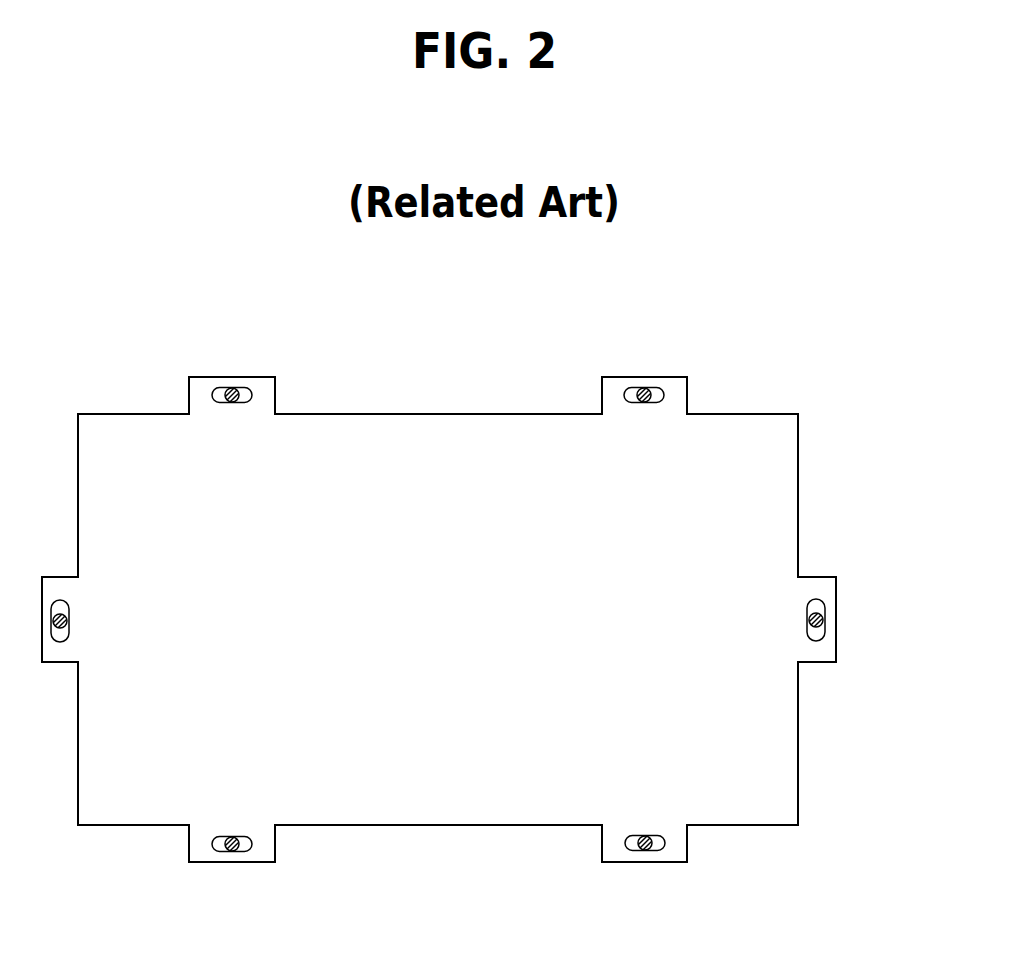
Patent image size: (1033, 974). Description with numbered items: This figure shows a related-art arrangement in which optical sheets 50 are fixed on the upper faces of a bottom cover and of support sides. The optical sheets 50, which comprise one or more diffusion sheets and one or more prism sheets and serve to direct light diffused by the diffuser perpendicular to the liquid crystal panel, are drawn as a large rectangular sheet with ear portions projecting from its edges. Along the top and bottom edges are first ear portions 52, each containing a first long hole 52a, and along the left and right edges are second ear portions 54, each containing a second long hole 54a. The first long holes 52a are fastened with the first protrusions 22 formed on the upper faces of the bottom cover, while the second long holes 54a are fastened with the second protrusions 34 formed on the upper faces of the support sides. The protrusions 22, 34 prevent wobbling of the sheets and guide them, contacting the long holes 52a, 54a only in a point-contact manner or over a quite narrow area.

The optical sheets 50 is at (443, 430).
The second ear portions 54 is at (827, 586).
The second long holes 54a is at (830, 636).
The second protrusions 34 is at (822, 620).
The first ear portions 52 is at (675, 850).
The first long holes 52a is at (628, 851).
The first protrusions 22 is at (641, 852).